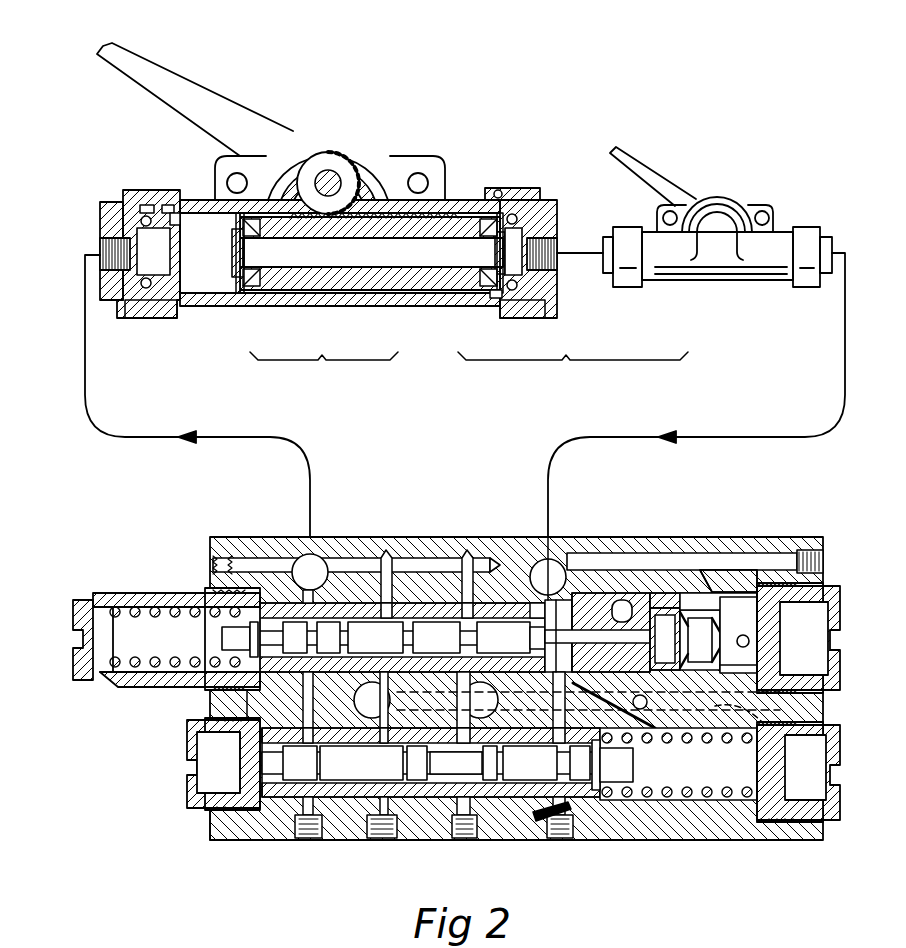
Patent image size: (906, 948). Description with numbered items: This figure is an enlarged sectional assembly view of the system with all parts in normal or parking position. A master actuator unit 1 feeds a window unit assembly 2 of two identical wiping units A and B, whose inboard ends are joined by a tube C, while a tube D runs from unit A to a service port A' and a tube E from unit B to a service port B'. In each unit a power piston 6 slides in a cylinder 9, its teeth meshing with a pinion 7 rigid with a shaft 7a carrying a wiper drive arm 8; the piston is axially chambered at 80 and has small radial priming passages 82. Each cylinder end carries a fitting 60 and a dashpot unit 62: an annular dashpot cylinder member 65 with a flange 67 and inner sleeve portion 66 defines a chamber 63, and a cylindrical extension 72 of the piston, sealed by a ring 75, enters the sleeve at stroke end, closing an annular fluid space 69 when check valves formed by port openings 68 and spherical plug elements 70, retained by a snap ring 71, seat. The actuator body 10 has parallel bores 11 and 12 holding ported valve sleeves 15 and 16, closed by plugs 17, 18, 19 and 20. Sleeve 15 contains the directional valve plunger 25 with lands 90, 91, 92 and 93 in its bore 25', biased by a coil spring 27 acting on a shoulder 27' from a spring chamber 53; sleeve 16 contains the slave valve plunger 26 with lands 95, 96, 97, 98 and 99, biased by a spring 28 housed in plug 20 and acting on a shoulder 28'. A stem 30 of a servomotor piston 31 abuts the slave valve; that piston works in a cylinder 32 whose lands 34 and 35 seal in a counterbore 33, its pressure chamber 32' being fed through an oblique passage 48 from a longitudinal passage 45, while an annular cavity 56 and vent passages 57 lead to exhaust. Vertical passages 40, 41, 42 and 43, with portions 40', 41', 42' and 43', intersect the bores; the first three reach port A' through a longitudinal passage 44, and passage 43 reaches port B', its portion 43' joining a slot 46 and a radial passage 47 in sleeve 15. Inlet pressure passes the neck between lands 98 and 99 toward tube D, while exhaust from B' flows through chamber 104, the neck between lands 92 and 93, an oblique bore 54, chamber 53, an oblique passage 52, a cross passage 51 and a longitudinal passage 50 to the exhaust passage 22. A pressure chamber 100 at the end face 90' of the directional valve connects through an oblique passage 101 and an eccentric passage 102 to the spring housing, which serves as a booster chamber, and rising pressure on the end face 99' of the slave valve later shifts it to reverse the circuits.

The master actuator unit 1 is at (240, 866).
The window unit assembly 2 is at (573, 375).
The power piston 6 is at (390, 289).
The toothed pinion or sector 7 is at (356, 171).
The shaft 7a is at (334, 177).
The wiper drive arm 8 is at (230, 112).
The cylinder 9 is at (245, 308).
The body 10 is at (503, 550).
The main bore 11 is at (428, 797).
The main bore 12 is at (514, 602).
The valve sleeve 15 is at (348, 800).
The valve sleeve 16 is at (433, 613).
The sealing plug 17 is at (195, 806).
The sealing plug 18 is at (816, 812).
The sealing plug 19 is at (818, 593).
The plug 20 is at (128, 677).
The cross passage 22 is at (372, 700).
The directional valve plunger 25 is at (431, 763).
The directional valve sleeve bore 25' is at (473, 810).
The slave valve plunger 26 is at (395, 627).
The coil spring 27 is at (592, 731).
The shoulder 27' is at (626, 765).
The coil spring 28 is at (175, 637).
The shoulder 28' is at (224, 639).
The stem portion 30 is at (622, 600).
The positioning servomotor piston 31 is at (690, 614).
The working cylinder 32 is at (664, 557).
The cylinder pressure chamber 32' is at (738, 634).
The counterbore portion 33 is at (727, 673).
The land portion 34 is at (581, 593).
The land portion 35 is at (700, 600).
The vertical cross passage 40 is at (295, 835).
The passage portion 40' is at (321, 700).
The vertical cross passage 41 is at (377, 838).
The passage portion 41' is at (401, 700).
The vertical cross passage 42 is at (454, 835).
The passage portion 42' is at (452, 700).
The vertical cross passage 43 is at (569, 835).
The passage portion 43' is at (544, 700).
The longitudinal drilled passage 44 is at (262, 565).
The longitudinal drilled passage 45 is at (637, 567).
The longitudinal slot 46 is at (516, 719).
The short radial passage 47 is at (498, 763).
The oblique passage 48 is at (715, 572).
The longitudinal passage 50 is at (729, 740).
The cross passage 51 is at (634, 704).
The oblique passage 52 is at (672, 722).
The spring chamber 53 is at (686, 783).
The short oblique bore 54 is at (613, 815).
The annular cavity 56 is at (633, 562).
The vent passages 57 is at (650, 653).
The fitting 60 is at (114, 295).
The dashpot unit 62 is at (183, 249).
The chamber 63 is at (130, 213).
The annular dashpot cylinder member 65 is at (102, 207).
The inner sleeve portion 66 is at (144, 260).
The flange portion 67 is at (152, 205).
The check valve port openings 68 is at (141, 302).
The annular fluid space 69 is at (498, 190).
The plug elements 70 is at (170, 206).
The snap ring 71 is at (157, 224).
The cylindrical extension 72 is at (238, 282).
The sealing ring 75 is at (268, 289).
The axial chamber 80 is at (342, 260).
The radial priming passages 82 is at (238, 232).
The land 90 is at (300, 763).
The left end face 90' is at (229, 764).
The land 91 is at (417, 763).
The land 92 is at (530, 763).
The land 93 is at (580, 763).
The land 95 is at (295, 637).
The land 96 is at (328, 637).
The land 97 is at (375, 637).
The land 98 is at (436, 637).
The land 99 is at (503, 637).
The end face surface 99' is at (549, 649).
The pressure chamber 100 is at (271, 771).
The oblique passage 101 is at (262, 707).
The longitudinal eccentric passage 102 is at (262, 681).
The chamber 104 is at (535, 537).
The window wiping unit A is at (324, 373).
The service port A' is at (310, 572).
The window wiping unit B is at (717, 254).
The service port B' is at (548, 577).
The tube C is at (582, 252).
The tube D is at (131, 437).
The tube E is at (725, 437).